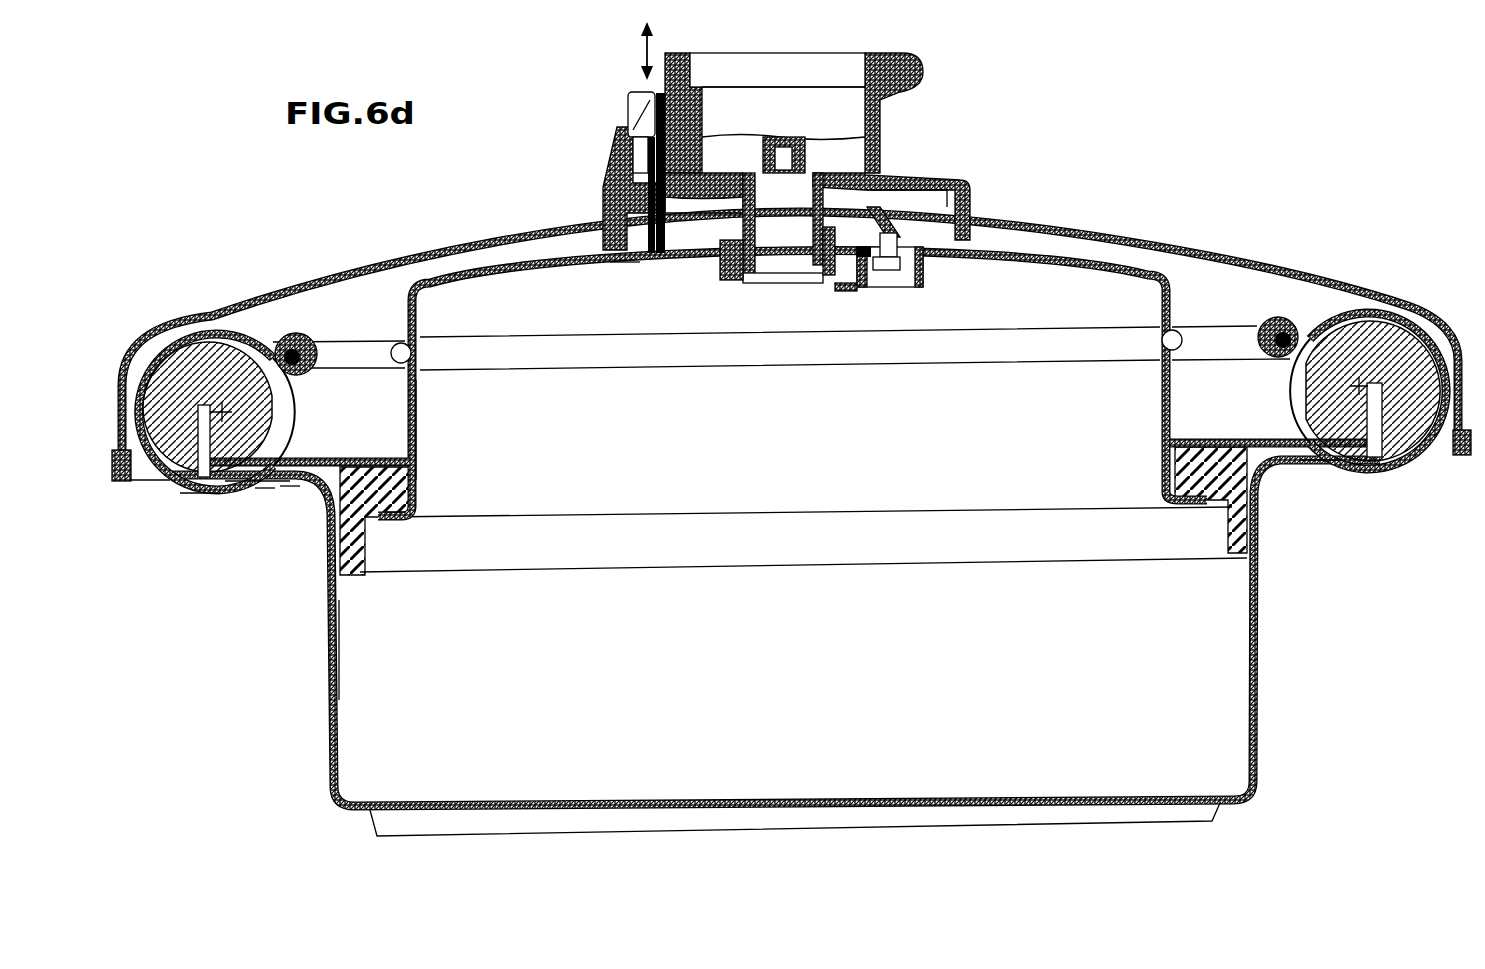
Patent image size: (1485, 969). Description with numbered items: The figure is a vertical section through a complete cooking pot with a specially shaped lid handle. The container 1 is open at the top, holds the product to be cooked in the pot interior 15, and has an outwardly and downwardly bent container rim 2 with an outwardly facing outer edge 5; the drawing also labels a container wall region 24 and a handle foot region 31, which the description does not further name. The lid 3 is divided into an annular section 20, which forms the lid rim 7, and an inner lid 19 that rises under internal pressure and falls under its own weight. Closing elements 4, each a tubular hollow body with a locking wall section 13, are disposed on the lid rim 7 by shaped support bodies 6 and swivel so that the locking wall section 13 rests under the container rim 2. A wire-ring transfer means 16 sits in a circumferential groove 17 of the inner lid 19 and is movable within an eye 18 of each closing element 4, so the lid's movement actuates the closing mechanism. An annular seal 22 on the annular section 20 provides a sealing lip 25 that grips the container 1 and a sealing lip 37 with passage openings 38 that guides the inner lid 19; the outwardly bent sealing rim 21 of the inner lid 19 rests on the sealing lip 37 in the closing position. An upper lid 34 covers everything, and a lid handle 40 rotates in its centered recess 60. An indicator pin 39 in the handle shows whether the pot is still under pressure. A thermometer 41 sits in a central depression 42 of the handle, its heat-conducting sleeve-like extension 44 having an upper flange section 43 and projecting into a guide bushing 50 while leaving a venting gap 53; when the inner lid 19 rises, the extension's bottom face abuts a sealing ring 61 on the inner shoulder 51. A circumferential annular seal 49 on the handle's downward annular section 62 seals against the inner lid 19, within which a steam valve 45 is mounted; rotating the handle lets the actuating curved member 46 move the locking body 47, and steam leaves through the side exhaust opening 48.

The container 1 is at (319, 656).
The container rim 2 is at (232, 486).
The lid 3 is at (445, 268).
The closing element 4 is at (237, 328).
The outer edge 5 is at (192, 494).
The shaped support body 6 is at (192, 333).
The lid rim 7 is at (284, 488).
The locking wall section 13 is at (265, 490).
The pot interior 15 is at (515, 676).
The transfer means 16 is at (367, 343).
The circumferential groove 17 is at (414, 340).
The eye 18 is at (306, 340).
The inner lid 19 is at (418, 418).
The annular section 20 is at (324, 458).
The sealing rim 21 is at (393, 520).
The annular seal 22 is at (370, 519).
The pot wall 24 is at (341, 650).
The sealing lip 25 is at (357, 577).
The shell foot 31 is at (178, 484).
The upper lid 34 is at (1078, 222).
The sealing lip 37 is at (418, 506).
The passage openings 38 is at (1163, 475).
The indicator pin 39 is at (660, 240).
The lid handle 40 is at (792, 162).
The thermometer 41 is at (846, 62).
The central depression 42 is at (708, 103).
The upper flange section 43 is at (840, 176).
The sleeve-like extension 44 is at (756, 210).
The steam valve 45 is at (944, 270).
The actuating curved member 46 is at (876, 208).
The locking body 47 is at (888, 271).
The side exhaust opening 48 is at (966, 196).
The circumferential annular seal 49 is at (616, 268).
The guide bushing 50 is at (852, 286).
The inner shoulder 51 is at (757, 284).
The venting gap 53 is at (727, 281).
The centered recess 60 is at (612, 212).
The sealing ring 61 is at (820, 276).
The annular section 62 is at (606, 236).